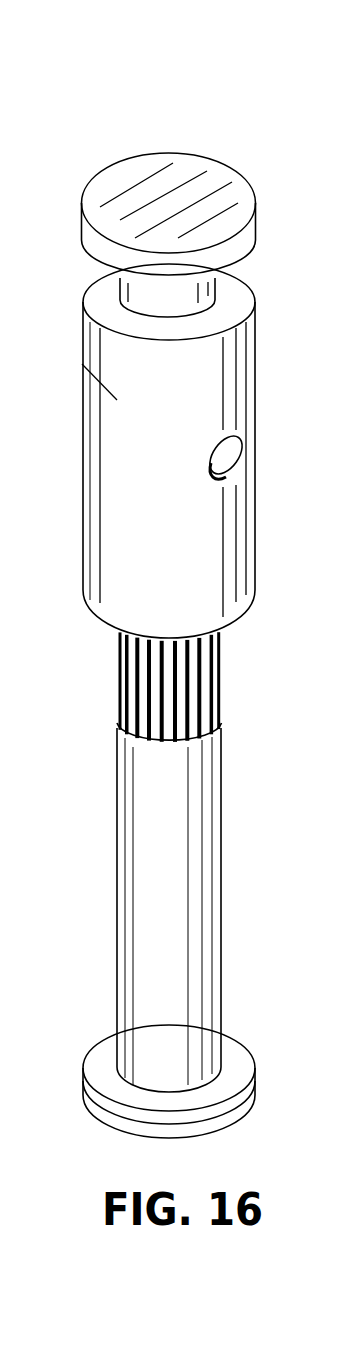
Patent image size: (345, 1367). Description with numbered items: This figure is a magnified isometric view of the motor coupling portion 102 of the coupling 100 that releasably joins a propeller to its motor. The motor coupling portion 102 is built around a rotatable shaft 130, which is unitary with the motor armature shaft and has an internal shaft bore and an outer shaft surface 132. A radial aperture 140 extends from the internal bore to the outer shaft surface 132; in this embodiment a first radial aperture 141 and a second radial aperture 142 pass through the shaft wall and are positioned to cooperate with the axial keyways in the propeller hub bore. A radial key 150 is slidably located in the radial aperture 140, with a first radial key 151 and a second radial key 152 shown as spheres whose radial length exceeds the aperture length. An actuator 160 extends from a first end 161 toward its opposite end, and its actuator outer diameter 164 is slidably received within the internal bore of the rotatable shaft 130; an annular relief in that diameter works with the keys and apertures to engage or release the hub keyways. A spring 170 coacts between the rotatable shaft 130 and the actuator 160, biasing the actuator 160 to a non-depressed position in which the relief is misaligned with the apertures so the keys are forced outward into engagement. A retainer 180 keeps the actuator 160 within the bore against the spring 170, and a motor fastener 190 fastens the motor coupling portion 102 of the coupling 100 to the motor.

The coupling 100 is at (218, 80).
The motor coupling portion 102 is at (103, 80).
The rotatable shaft 130 is at (88, 570).
The outer shaft surface 132 is at (88, 489).
The radial aperture 140 is at (227, 473).
The first radial aperture 141 is at (222, 475).
The second radial aperture 142 is at (108, 425).
The radial key 150 is at (240, 455).
The first radial key 151 is at (237, 443).
The second radial key 152 is at (78, 363).
The actuator 160 is at (194, 170).
The first end 161 is at (130, 172).
The actuator outer diameter 164 is at (120, 285).
The spring 170 is at (185, 565).
The retainer 180 is at (97, 1048).
The motor fastener 190 is at (113, 1123).